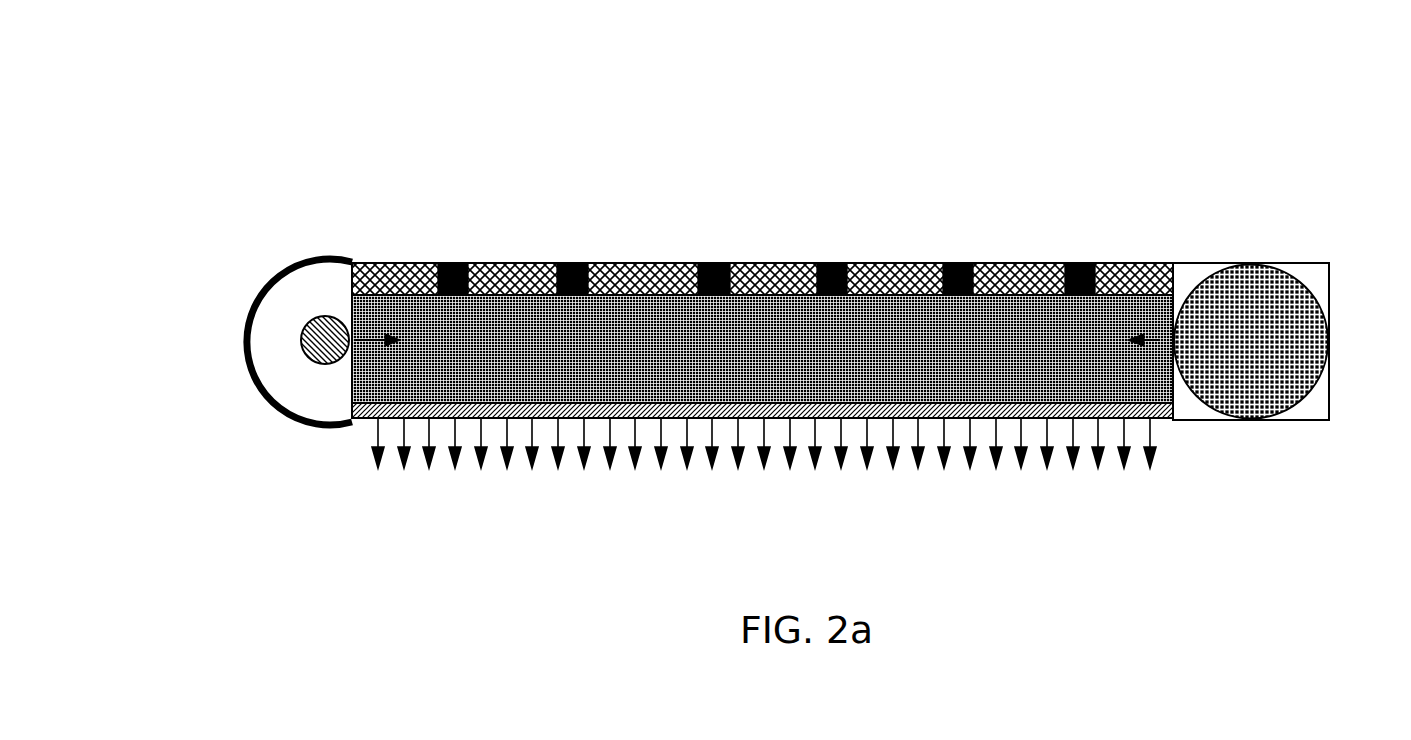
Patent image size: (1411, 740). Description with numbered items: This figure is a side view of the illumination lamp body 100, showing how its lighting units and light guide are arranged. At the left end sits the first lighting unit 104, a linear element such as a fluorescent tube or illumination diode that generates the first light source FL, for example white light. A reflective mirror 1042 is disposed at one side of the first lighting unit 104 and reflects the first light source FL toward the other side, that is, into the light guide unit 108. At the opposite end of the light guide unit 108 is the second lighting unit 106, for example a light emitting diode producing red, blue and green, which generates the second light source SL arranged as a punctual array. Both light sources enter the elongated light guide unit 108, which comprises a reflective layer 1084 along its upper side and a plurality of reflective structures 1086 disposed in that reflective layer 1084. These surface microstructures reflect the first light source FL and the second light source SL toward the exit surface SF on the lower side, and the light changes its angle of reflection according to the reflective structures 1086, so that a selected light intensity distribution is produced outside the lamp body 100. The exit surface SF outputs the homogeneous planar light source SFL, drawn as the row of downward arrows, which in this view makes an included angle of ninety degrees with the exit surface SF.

The illumination lamp body 100 is at (635, 168).
The first lighting unit 104 is at (322, 338).
The reflective mirror 1042 is at (268, 394).
The second lighting unit 106 is at (1287, 332).
The light guide unit 108 is at (900, 376).
The reflective layer 1084 is at (1122, 285).
The reflective structures 1086 is at (722, 262).
The first light source FL is at (366, 336).
The second light source SL is at (1160, 340).
The exit surface SF is at (1092, 403).
The planar light source SFL is at (453, 432).